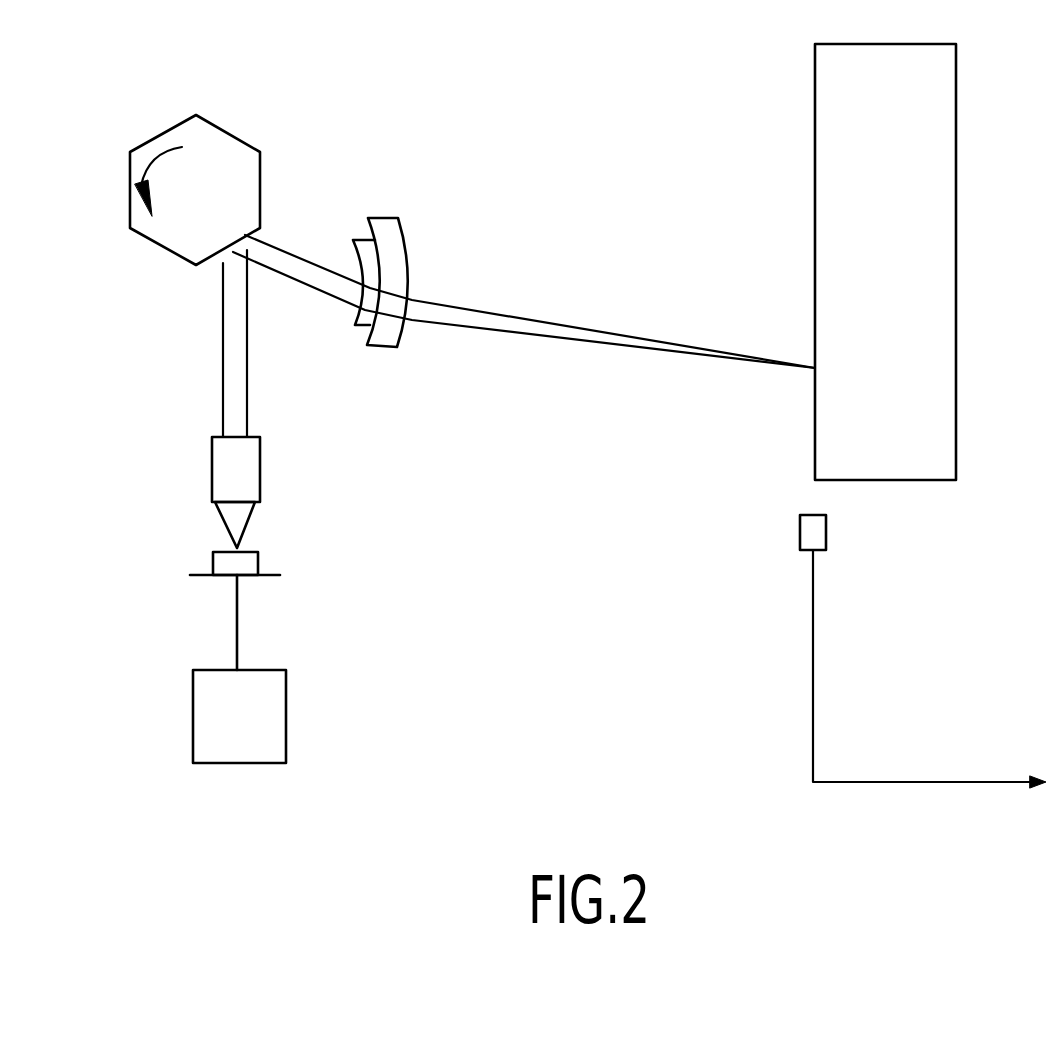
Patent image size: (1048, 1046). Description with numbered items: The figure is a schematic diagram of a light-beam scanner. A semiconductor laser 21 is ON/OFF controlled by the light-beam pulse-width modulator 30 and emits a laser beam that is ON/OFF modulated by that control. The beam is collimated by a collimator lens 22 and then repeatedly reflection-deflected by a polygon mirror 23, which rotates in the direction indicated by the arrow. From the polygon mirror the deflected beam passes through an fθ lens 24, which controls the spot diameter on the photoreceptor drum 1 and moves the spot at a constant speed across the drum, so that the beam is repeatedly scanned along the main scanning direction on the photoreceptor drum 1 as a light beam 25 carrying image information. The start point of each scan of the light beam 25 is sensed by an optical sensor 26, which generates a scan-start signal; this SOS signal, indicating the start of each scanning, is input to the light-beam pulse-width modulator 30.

The photoreceptor drum 1 is at (898, 480).
The semiconductor laser 21 is at (258, 563).
The collimator lens 22 is at (260, 450).
The polygon mirror 23 is at (214, 126).
The fθ lens 24 is at (408, 250).
The light beam 25 is at (530, 338).
The optical sensor 26 is at (800, 536).
The light-beam pulse-width modulator 30 is at (286, 708).